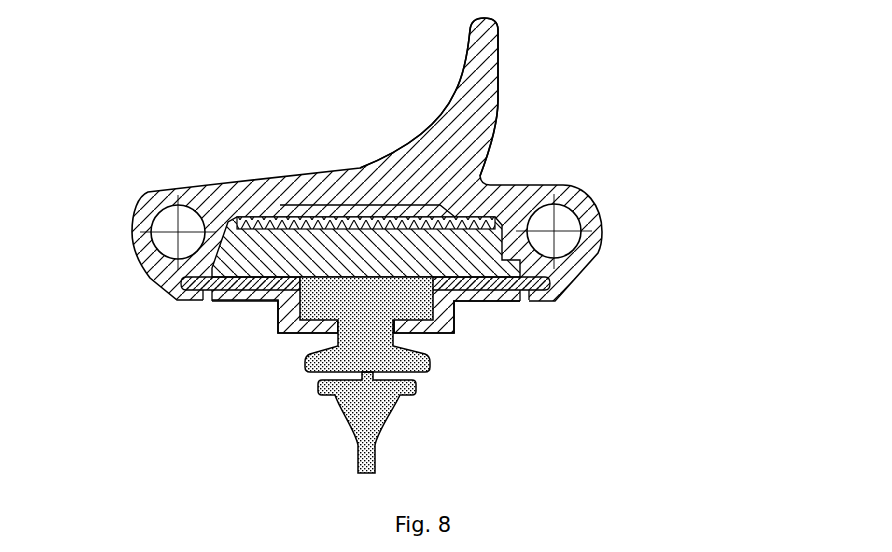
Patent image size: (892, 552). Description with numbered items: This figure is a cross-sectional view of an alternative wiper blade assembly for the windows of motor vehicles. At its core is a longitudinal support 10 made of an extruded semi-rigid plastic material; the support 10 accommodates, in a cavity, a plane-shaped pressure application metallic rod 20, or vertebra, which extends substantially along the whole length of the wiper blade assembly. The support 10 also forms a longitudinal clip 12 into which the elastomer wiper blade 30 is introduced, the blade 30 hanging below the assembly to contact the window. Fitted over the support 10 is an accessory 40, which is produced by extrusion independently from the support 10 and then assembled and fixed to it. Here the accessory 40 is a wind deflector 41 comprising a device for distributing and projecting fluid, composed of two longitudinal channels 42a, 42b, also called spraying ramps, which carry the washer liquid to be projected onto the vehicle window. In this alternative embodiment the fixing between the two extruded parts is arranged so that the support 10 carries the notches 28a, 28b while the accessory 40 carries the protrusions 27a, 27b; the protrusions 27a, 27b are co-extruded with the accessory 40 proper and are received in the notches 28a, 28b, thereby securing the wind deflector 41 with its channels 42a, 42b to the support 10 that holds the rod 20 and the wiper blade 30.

The longitudinal support 10 is at (255, 216).
The longitudinal clip 12 is at (281, 336).
The pressure application metallic rod 20 is at (310, 237).
The protrusion 27a is at (190, 304).
The protrusion 27b is at (570, 283).
The notch 28a is at (217, 304).
The notch 28b is at (502, 302).
The elastomer wiper blade 30 is at (376, 455).
The accessory 40 is at (452, 84).
The wind deflector 41 is at (485, 67).
The longitudinal channel 42a is at (143, 203).
The longitudinal channel 42b is at (582, 208).